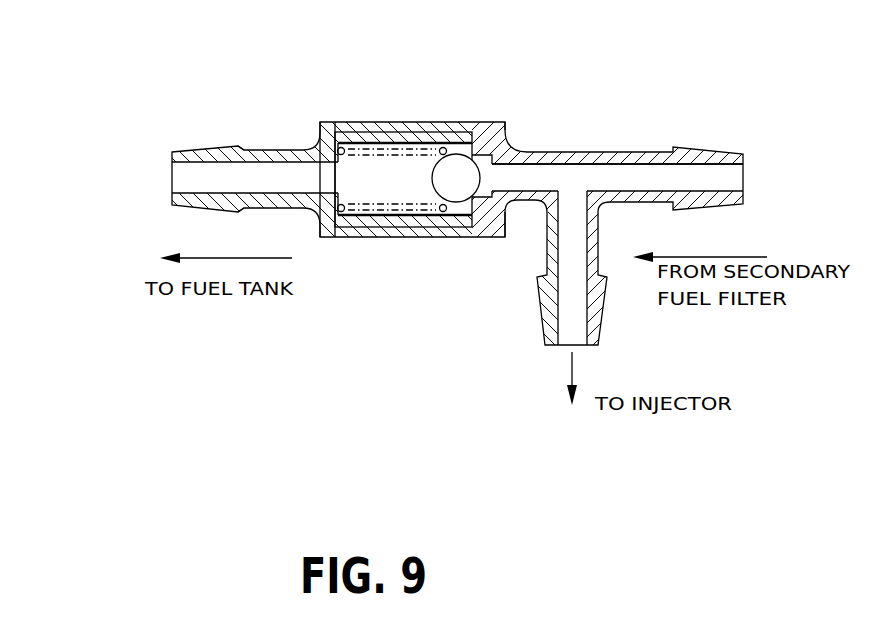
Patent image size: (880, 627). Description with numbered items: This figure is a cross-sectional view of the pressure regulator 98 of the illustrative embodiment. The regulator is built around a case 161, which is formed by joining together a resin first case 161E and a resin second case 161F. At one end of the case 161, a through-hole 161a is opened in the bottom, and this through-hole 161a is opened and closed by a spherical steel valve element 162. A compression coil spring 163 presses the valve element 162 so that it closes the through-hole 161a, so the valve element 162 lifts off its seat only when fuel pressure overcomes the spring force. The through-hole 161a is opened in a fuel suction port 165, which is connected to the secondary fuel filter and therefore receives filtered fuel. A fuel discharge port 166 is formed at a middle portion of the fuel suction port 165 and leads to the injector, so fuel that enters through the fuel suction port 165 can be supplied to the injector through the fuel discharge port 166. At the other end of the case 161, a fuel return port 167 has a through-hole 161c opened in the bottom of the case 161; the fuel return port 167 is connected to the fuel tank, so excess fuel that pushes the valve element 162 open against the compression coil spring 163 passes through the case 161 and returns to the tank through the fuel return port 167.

The pressure regulator 98 is at (133, 161).
The case 161 is at (414, 131).
The through-hole 161a is at (545, 168).
The through-hole 161c is at (249, 164).
The first case 161E is at (510, 115).
The second case 161F is at (313, 115).
The valve element 162 is at (458, 155).
The compression coil spring 163 is at (345, 150).
The fuel suction port 165 is at (678, 148).
The fuel discharge port 166 is at (545, 280).
The fuel return port 167 is at (193, 150).